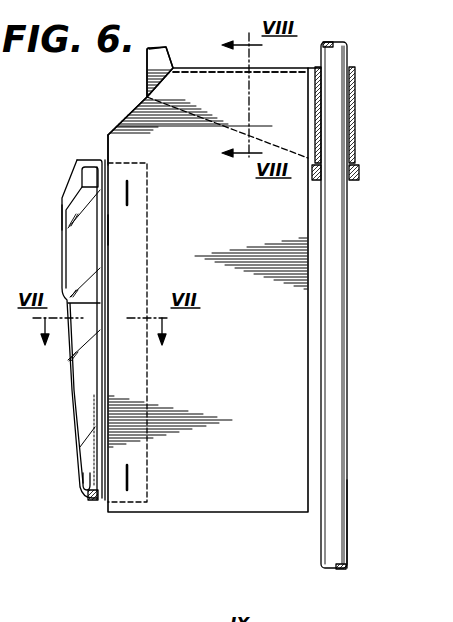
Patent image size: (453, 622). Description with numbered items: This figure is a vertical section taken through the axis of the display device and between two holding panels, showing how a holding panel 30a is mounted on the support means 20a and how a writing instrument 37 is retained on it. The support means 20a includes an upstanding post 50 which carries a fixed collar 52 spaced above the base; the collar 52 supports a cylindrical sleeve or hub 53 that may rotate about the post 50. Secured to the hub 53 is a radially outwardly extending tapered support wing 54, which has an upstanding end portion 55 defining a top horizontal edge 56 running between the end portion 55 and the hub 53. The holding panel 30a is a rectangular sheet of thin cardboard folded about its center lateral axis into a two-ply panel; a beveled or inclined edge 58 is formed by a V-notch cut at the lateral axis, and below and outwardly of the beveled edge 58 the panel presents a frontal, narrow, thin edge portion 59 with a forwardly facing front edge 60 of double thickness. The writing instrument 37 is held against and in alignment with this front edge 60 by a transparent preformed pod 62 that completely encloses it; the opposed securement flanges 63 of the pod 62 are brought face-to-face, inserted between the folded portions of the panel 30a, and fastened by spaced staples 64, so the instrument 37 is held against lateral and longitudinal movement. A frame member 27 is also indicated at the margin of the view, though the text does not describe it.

The support means 20a is at (352, 512).
The frame member 27 is at (31, 218).
The holding panel 30a is at (200, 512).
The writing instrument 37 is at (82, 368).
The post 50 is at (336, 361).
The fixed collar 52 is at (359, 168).
The hub 53 is at (357, 89).
The support wing 54 is at (318, 67).
The upstanding end portion 55 is at (155, 52).
The top horizontal edge 56 is at (205, 68).
The beveled edge 58 is at (140, 106).
The frontal edge portion 59 is at (108, 150).
The front edge 60 is at (109, 230).
The pod 62 is at (95, 497).
The securement flanges 63 is at (147, 368).
The staples 64 is at (166, 464).